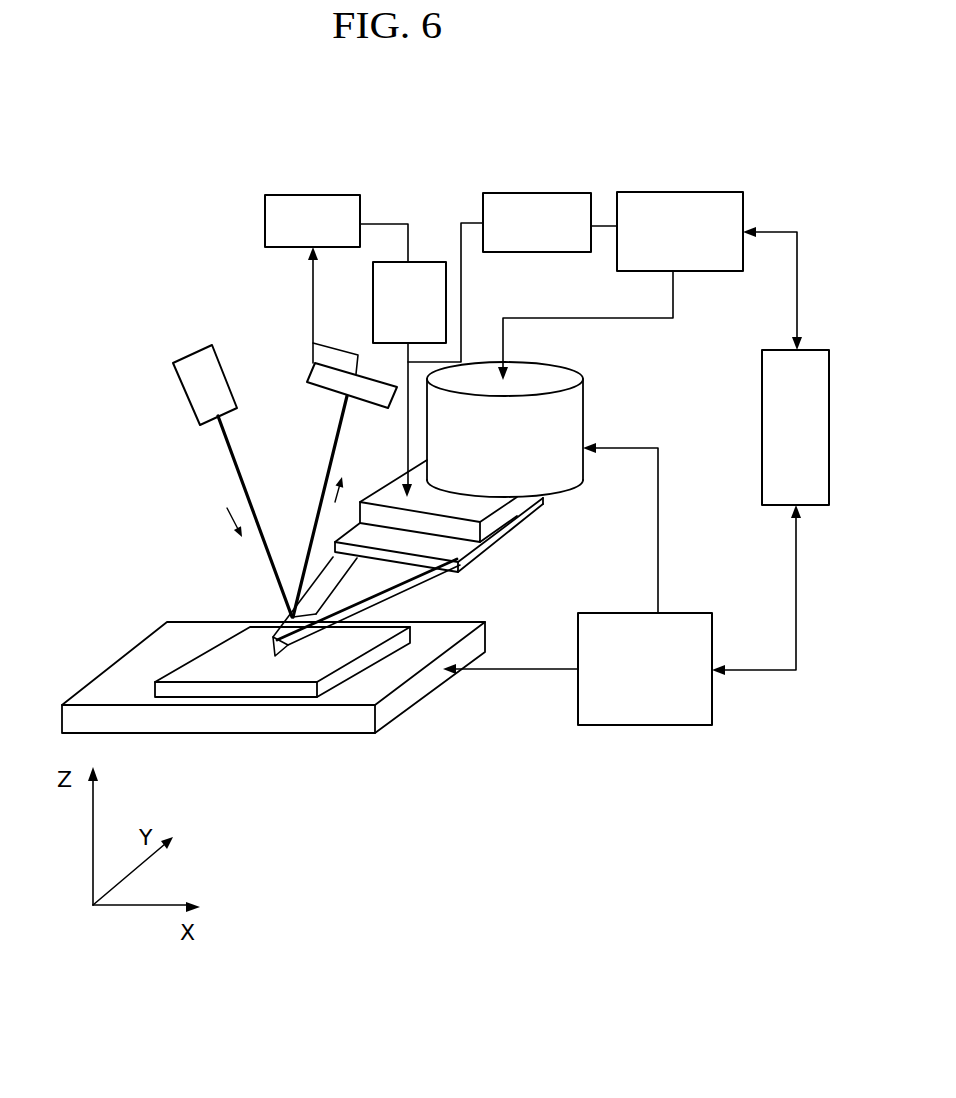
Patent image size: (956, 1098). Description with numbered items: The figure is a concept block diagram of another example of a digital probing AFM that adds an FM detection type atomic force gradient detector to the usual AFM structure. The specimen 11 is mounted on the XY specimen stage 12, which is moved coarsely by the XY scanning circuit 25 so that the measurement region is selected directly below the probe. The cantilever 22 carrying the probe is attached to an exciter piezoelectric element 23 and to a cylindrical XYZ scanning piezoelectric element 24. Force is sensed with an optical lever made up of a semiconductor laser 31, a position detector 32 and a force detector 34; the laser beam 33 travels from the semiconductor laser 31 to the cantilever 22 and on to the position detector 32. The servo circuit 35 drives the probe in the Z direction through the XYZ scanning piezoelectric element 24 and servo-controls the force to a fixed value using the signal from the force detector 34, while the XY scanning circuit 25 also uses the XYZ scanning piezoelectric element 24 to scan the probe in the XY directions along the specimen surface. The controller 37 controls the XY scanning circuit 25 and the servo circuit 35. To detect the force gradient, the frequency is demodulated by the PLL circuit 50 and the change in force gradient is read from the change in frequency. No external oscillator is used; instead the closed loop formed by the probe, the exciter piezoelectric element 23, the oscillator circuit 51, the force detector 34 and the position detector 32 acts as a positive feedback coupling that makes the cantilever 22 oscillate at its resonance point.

The specimen 11 is at (235, 657).
The XY specimen stage 12 is at (130, 657).
The cantilever 22 is at (387, 590).
The exciter piezoelectric element 23 is at (532, 505).
The XYZ scanning piezoelectric element 24 is at (585, 402).
The XY scanning circuit 25 is at (688, 617).
The semiconductor laser 31 is at (188, 398).
The position detector 32 is at (313, 375).
The reflected laser beam 33 is at (335, 475).
The force detector 34 is at (325, 199).
The servo circuit 35 is at (647, 193).
The controller 37 is at (816, 355).
The PLL circuit 50 is at (527, 205).
The oscillator circuit 51 is at (436, 264).